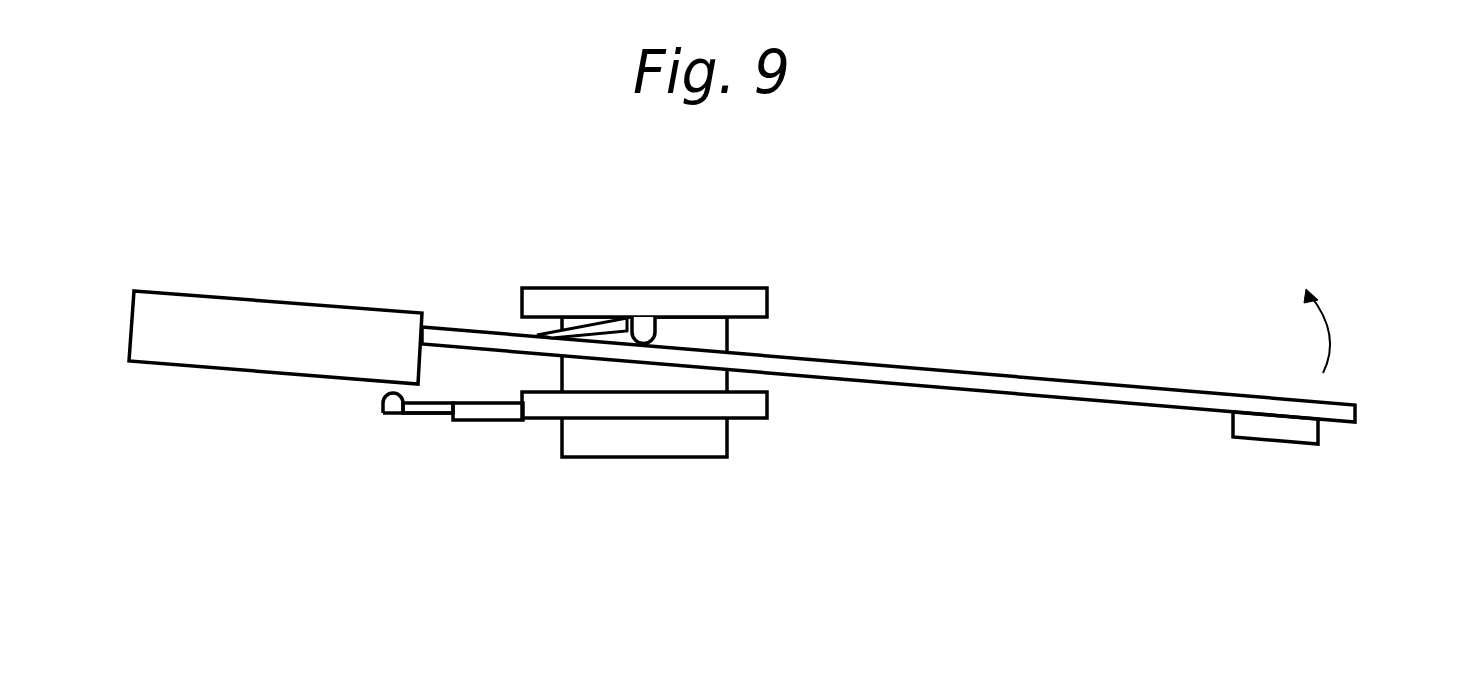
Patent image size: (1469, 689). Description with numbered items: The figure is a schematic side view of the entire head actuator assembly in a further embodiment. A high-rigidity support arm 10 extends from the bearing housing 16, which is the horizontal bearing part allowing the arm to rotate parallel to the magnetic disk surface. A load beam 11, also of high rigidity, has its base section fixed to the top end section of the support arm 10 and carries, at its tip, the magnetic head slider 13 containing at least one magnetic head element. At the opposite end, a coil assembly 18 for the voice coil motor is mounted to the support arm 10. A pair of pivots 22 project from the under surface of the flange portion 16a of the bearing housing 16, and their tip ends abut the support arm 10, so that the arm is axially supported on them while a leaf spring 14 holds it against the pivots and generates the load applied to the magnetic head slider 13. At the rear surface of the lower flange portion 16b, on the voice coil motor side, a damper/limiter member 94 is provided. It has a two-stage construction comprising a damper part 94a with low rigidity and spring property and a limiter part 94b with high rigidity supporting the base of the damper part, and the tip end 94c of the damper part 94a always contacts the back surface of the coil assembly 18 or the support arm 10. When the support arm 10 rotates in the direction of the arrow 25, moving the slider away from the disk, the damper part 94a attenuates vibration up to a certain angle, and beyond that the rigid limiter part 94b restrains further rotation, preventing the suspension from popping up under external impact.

The support arm 10 is at (888, 409).
The load beam 11 is at (1092, 395).
The magnetic head slider 13 is at (1278, 428).
The leaf spring 14 is at (537, 335).
The horizontal bearing part (bearing housing) 16 is at (881, 380).
The flange portion 16a is at (760, 303).
The lower flange portion 16b is at (543, 407).
The coil assembly 18 is at (182, 350).
The pivots 22 is at (637, 325).
The arrow 25 is at (1330, 330).
The damper/limiter member 94 is at (383, 472).
The damper part 94a is at (422, 407).
The limiter part 94b is at (487, 407).
The tip end 94c is at (393, 400).